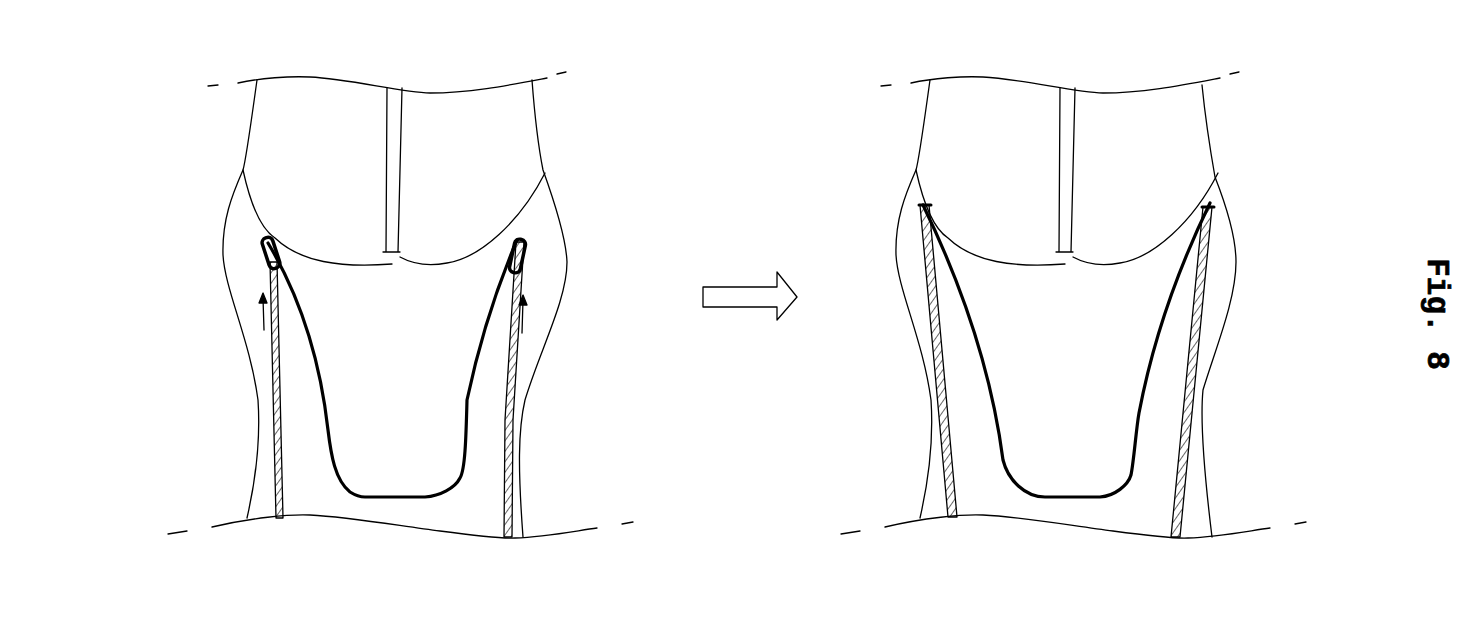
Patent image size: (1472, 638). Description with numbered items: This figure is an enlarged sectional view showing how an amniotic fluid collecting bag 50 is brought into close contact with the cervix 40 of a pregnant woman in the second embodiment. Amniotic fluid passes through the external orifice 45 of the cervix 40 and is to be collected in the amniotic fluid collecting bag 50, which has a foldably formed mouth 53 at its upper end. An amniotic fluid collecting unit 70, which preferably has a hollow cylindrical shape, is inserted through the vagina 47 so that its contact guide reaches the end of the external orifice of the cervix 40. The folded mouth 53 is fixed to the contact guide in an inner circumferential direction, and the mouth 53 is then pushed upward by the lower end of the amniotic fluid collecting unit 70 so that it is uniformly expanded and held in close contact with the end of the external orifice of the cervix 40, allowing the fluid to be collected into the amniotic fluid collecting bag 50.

The cervix 40 is at (490, 133).
The external orifice 45 is at (402, 250).
The vagina 47 is at (250, 265).
The amniotic fluid collecting bag 50 is at (478, 353).
The mouth 53 is at (523, 258).
The amniotic fluid collecting unit 70 is at (513, 282).